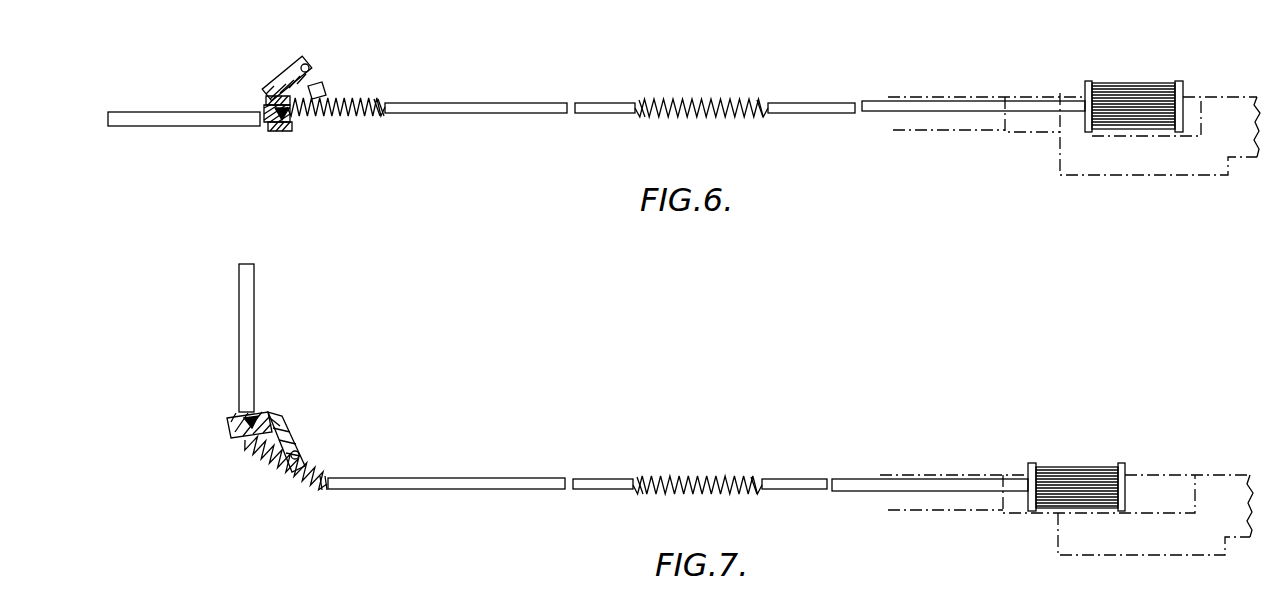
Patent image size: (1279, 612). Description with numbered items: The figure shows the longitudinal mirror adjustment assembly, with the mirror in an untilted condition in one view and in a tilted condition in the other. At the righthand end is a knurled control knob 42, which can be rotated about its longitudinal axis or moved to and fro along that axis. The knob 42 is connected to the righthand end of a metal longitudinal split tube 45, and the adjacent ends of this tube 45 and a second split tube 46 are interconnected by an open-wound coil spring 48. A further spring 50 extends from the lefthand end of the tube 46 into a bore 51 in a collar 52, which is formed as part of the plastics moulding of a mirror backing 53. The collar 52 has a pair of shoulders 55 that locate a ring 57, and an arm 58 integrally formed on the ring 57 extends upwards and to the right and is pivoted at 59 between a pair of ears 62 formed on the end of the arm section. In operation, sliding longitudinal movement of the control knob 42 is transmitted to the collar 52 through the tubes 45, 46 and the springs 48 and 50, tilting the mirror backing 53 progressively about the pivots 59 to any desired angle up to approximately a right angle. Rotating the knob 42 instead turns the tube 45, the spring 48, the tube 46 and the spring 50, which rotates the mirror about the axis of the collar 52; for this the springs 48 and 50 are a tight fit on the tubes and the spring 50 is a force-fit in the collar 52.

In FIG. 6, the knurled control knob 42 is at (1122, 90).
In FIG. 7, the knurled control knob 42 is at (1077, 475).
In FIG. 6, the longitudinal split tube 45 is at (828, 111).
In FIG. 7, the longitudinal split tube 45 is at (855, 491).
In FIG. 6, the longitudinal split tube 46 is at (480, 111).
In FIG. 7, the longitudinal split tube 46 is at (480, 489).
In FIG. 6, the open-wound coil spring 48 is at (688, 115).
In FIG. 7, the open-wound coil spring 48 is at (695, 487).
In FIG. 6, the spring 50 is at (348, 114).
In FIG. 7, the spring 50 is at (258, 466).
In FIG. 6, the bore 51 is at (288, 117).
In FIG. 6, the collar 52 is at (262, 120).
In FIG. 7, the collar 52 is at (249, 425).
In FIG. 6, the mirror backing 53 is at (169, 112).
In FIG. 7, the mirror backing 53 is at (243, 313).
In FIG. 6, the shoulders 55 is at (283, 131).
In FIG. 6, the ring 57 is at (267, 92).
In FIG. 6, the arm 58 is at (293, 75).
In FIG. 7, the arm 58 is at (294, 446).
In FIG. 6, the pivot 59 is at (308, 65).
In FIG. 6, the ears 62 is at (322, 94).